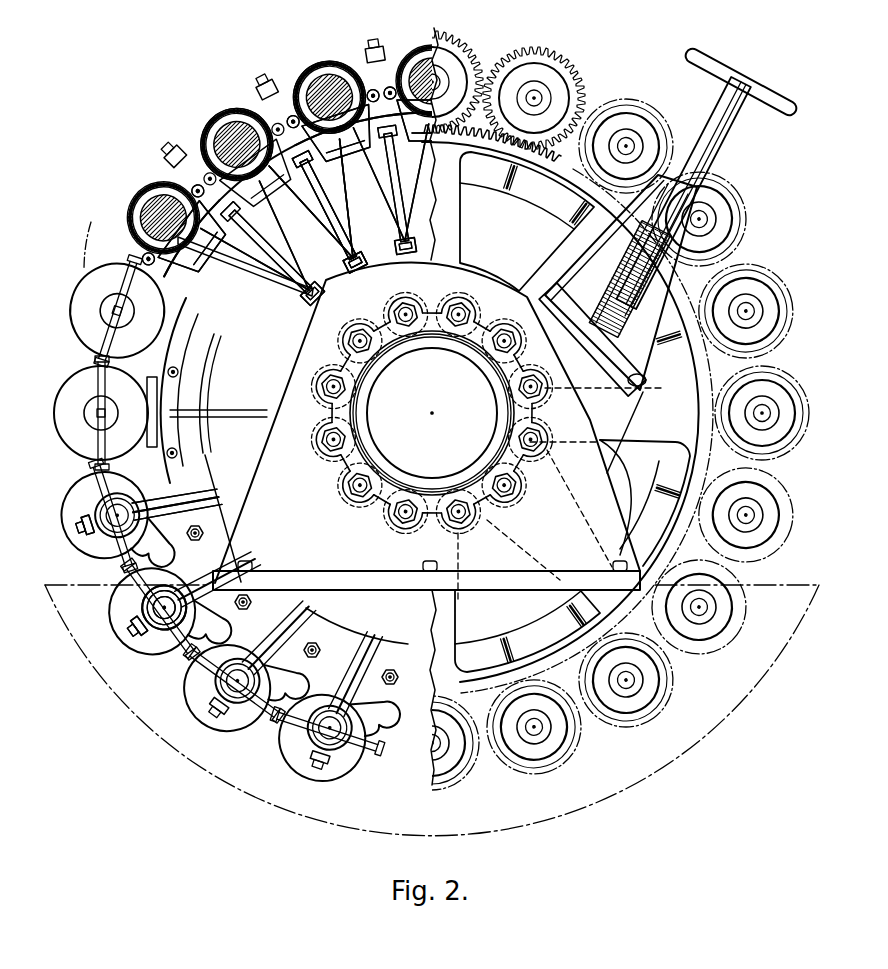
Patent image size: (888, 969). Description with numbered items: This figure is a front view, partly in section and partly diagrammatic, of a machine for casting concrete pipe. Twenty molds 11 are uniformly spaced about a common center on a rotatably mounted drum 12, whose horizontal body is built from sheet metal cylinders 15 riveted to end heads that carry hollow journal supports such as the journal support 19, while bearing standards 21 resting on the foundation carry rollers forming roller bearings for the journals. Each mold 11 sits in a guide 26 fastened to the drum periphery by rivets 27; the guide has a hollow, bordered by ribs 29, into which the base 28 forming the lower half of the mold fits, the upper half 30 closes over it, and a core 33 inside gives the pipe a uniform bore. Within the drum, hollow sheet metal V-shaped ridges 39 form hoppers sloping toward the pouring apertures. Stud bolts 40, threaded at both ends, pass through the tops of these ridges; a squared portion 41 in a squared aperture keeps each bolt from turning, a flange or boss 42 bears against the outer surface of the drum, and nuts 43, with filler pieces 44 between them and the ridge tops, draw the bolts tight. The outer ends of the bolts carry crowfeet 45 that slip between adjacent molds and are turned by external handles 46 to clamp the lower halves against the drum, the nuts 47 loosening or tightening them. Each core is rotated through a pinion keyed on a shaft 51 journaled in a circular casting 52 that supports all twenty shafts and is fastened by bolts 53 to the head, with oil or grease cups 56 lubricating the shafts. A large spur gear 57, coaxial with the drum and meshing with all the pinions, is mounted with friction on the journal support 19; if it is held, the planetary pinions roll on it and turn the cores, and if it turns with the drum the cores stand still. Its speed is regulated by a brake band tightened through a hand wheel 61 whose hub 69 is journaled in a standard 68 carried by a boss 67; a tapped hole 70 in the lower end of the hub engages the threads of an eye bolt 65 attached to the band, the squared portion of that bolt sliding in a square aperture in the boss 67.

The molds 11 is at (130, 207).
The drum 12 is at (541, 190).
The sheet metal cylinders 15 is at (250, 205).
The journal support 19 is at (375, 460).
The bearing standards 21 is at (578, 412).
The guides 26 is at (285, 190).
The rivets 27 is at (195, 292).
The base 28 is at (205, 250).
The ribs 29 is at (153, 390).
The upper half 30 is at (230, 107).
The core 33 is at (222, 125).
The V-shaped ridges 39 is at (353, 205).
The stud bolts 40 is at (400, 183).
The squared portion 41 is at (400, 140).
The flange or boss 42 is at (382, 143).
The nuts 43 is at (367, 263).
The filler pieces 44 is at (310, 290).
The crowfeet 45 is at (345, 52).
The external handles 46 is at (320, 62).
The nuts 47 is at (382, 47).
The shaft 51 is at (170, 607).
The circular casting 52 is at (203, 500).
The bolts 53 is at (263, 592).
The oil or grease cups 56 is at (90, 525).
The large spur gear 57 is at (677, 430).
The hand wheel 61 is at (708, 58).
The eye bolt 65 is at (610, 293).
The boss 67 is at (625, 410).
The standard 68 is at (647, 340).
The hub 69 is at (724, 138).
The tapped hole 70 is at (623, 245).